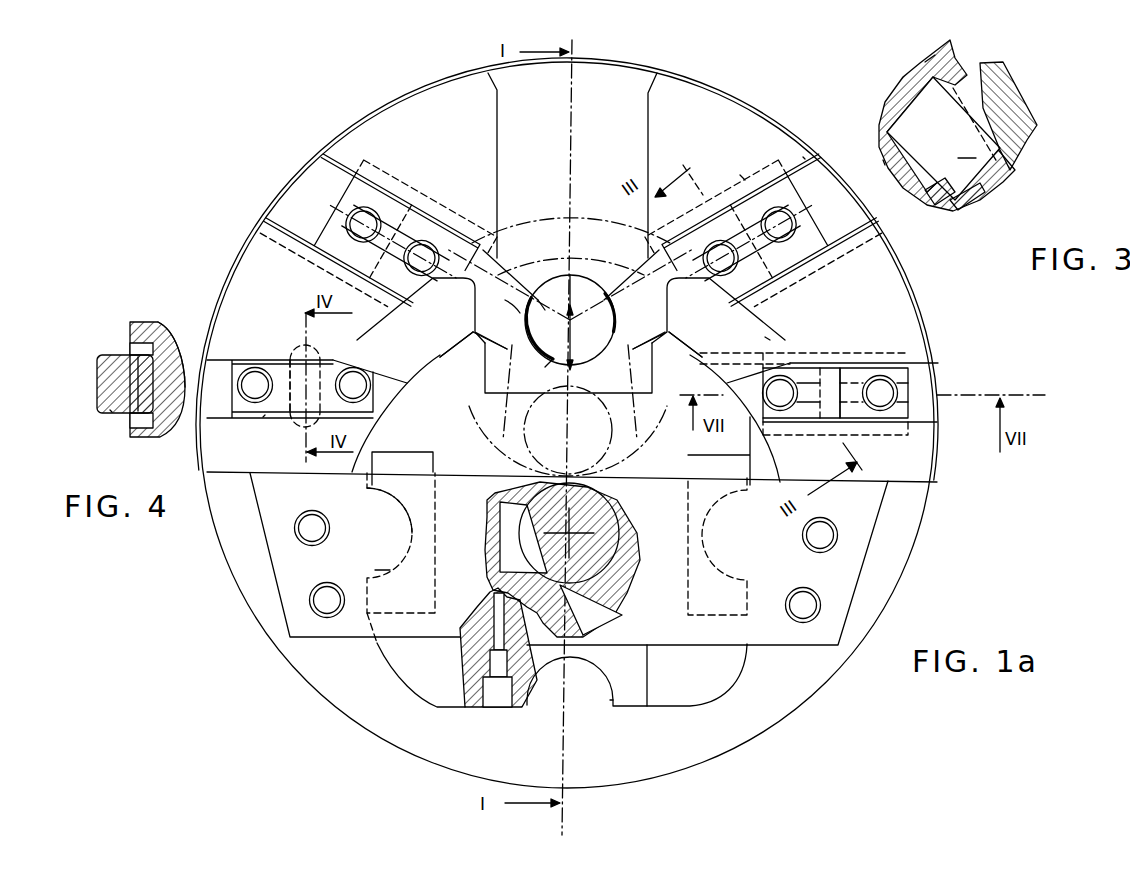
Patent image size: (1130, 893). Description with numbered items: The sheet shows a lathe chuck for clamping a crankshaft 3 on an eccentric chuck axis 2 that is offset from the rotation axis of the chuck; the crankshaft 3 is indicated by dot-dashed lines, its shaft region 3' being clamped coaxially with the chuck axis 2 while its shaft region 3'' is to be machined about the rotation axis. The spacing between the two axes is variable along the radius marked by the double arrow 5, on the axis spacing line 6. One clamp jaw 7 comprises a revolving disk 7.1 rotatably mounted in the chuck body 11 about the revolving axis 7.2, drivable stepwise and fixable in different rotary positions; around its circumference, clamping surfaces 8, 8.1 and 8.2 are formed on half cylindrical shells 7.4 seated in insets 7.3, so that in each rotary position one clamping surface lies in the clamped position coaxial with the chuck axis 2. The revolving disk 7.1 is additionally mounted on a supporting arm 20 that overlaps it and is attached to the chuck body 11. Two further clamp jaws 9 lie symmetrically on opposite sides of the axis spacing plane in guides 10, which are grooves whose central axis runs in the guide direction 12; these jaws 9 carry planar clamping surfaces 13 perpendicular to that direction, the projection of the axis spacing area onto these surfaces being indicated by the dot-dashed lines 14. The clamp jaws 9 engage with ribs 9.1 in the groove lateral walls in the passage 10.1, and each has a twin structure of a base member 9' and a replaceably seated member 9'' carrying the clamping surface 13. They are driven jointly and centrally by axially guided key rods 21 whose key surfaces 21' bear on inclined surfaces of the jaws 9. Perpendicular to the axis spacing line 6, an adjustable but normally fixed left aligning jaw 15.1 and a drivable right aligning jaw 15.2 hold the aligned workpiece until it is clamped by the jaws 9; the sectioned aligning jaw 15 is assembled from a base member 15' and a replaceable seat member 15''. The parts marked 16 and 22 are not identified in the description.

In FIG. 1A, the chuck axis 2 is at (556, 328).
In FIG. 1A, the crankshaft 3 is at (571, 325).
In FIG. 1A, the shaft region 3' is at (571, 270).
In FIG. 1A, the shaft region 3'' is at (588, 430).
In FIG. 1A, the double arrow 5 is at (573, 330).
In FIG. 1A, the axis spacing line 6 is at (571, 213).
In FIG. 1A, the clamp jaw 7 is at (393, 485).
In FIG. 1A, the revolving disk 7.1 is at (720, 677).
In FIG. 1A, the revolving axis 7.2 is at (623, 512).
In FIG. 1A, the insets 7.3 is at (648, 378).
In FIG. 1A, the half cylindrical shells 7.4 is at (605, 687).
In FIG. 1A, the clamping surface 8 is at (545, 367).
In FIG. 1A, the clamping surface 8.1 is at (410, 515).
In FIG. 1A, the clamping surface 8.2 is at (560, 663).
In FIG. 1A, the clamp jaws 9 is at (571, 234).
In FIG. 3, the clamp jaws 9 is at (943, 121).
In FIG. 3, the base member 9' is at (967, 149).
In FIG. 3, the seated member 9'' is at (1025, 116).
In FIG. 1A, the ribs 9.1 is at (745, 180).
In FIG. 3, the ribs 9.1 is at (900, 165).
In FIG. 1A, the guides 10 is at (285, 197).
In FIG. 1A, the passage 10.1 is at (803, 157).
In FIG. 3, the passage 10.1 is at (907, 76).
In FIG. 1A, the chuck body 11 is at (357, 707).
In FIG. 3, the chuck body 11 is at (933, 65).
In FIG. 4, the chuck body 11 is at (157, 334).
In FIG. 1A, the guide direction 12 is at (520, 330).
In FIG. 1A, the clamping surface 13 is at (506, 297).
In FIG. 1A, the dot-dashed lines 14 is at (555, 295).
In FIG. 1A, the jaw carrier 15 is at (572, 390).
In FIG. 4, the jaw carrier 15 is at (181, 354).
In FIG. 1A, the base member 15' is at (256, 433).
In FIG. 1A, the seat member 15'' is at (789, 327).
In FIG. 4, the seat member 15'' is at (97, 432).
In FIG. 1A, the aligning jaw 15.1 is at (262, 360).
In FIG. 4, the aligning jaw 15.1 is at (95, 345).
In FIG. 1A, the aligning jaw 15.2 is at (827, 363).
In FIG. 1A, the guide block 16 is at (472, 313).
In FIG. 1A, the supporting arm 20 is at (285, 567).
In FIG. 3, the key rods 21 is at (967, 215).
In FIG. 3, the key surfaces 21' is at (935, 213).
In FIG. 1A, the fastening screw 22 is at (343, 210).